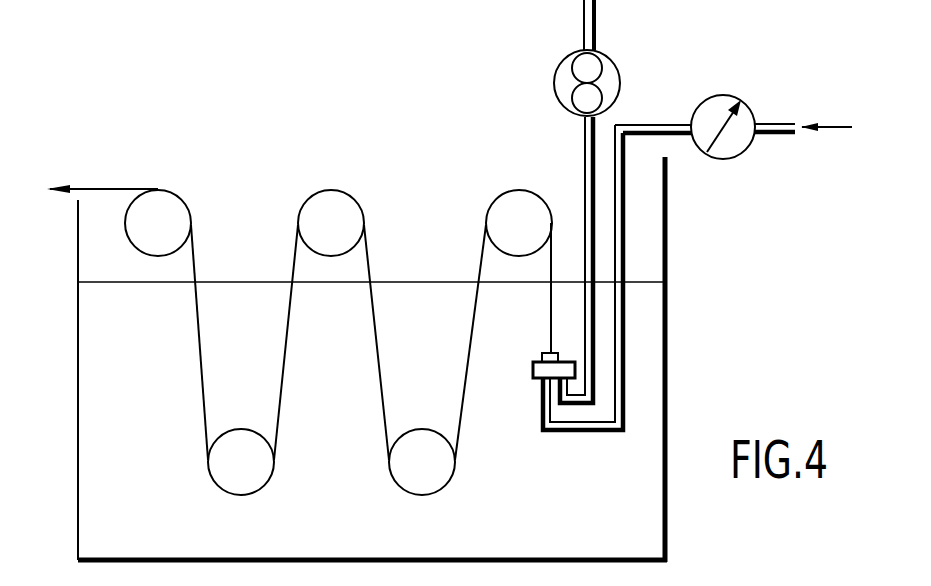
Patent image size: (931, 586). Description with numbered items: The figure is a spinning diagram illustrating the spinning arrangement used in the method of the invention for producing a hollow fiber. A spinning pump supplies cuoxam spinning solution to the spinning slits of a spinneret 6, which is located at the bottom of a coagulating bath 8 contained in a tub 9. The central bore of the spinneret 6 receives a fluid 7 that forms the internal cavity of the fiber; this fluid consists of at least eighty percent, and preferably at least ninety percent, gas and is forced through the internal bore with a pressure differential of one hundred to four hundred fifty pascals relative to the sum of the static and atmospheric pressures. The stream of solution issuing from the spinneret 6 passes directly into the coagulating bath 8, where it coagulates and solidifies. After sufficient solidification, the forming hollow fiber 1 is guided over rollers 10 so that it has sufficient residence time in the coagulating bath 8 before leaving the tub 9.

The hollow fiber 1 is at (104, 189).
The spinneret 6 is at (535, 370).
The fluid 7 is at (840, 126).
The coagulating bath 8 is at (105, 507).
The tub 9 is at (667, 533).
The rollers 10 is at (172, 207).